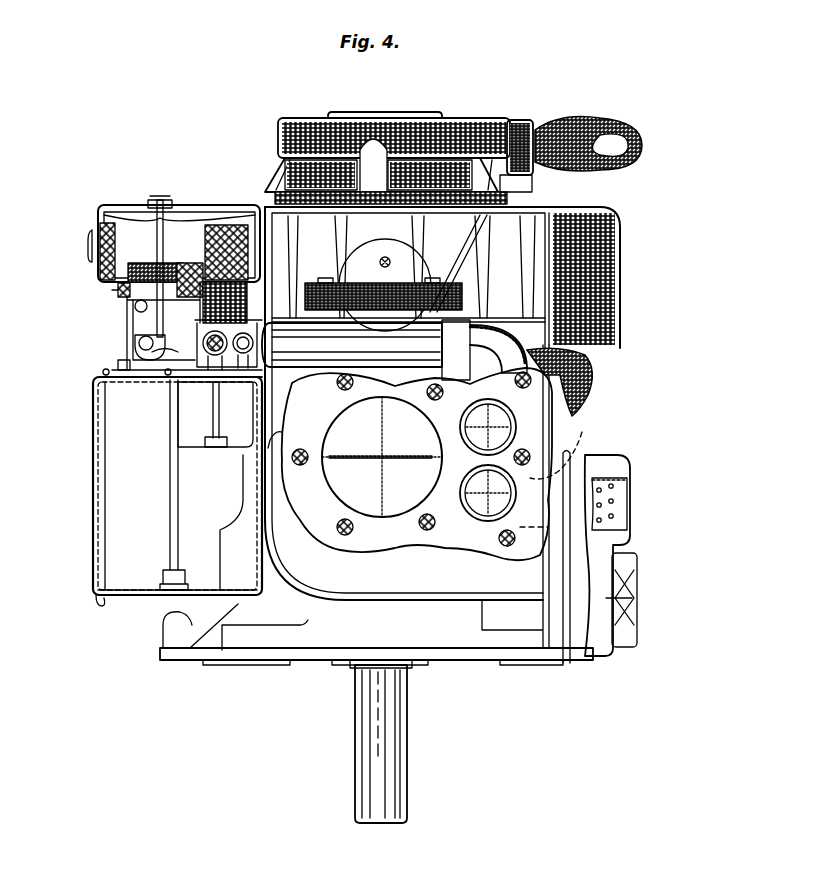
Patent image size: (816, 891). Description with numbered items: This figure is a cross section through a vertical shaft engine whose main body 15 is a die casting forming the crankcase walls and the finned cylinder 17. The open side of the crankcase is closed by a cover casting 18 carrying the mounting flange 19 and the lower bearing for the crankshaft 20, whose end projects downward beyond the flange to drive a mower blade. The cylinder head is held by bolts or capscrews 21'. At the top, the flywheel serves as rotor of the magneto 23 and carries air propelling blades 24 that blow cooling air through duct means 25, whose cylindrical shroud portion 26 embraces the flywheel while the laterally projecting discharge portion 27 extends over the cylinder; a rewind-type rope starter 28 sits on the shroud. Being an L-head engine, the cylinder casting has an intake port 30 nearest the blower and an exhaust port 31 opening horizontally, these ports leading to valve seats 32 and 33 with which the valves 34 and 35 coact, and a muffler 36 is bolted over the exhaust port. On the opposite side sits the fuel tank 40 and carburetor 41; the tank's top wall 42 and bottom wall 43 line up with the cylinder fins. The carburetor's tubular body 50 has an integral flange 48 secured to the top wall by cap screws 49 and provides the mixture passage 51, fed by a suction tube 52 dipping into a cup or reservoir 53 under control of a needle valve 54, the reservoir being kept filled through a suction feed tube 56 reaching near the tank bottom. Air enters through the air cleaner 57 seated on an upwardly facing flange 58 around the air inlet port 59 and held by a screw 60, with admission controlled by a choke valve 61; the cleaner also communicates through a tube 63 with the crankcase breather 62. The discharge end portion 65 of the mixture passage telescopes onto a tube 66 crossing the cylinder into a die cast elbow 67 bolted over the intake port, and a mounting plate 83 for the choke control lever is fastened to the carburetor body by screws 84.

The main body 15 is at (650, 325).
The finned cylinder 17 is at (385, 588).
The cover casting 18 is at (210, 648).
The mounting flange 19 is at (262, 665).
The crankshaft 20 is at (360, 745).
The bolts or capscrews 21' is at (409, 485).
The magneto 23 is at (405, 235).
The air propelling blades 24 is at (345, 240).
The duct means 25 is at (636, 214).
The shroud portion 26 is at (605, 282).
The discharge portion 27 is at (550, 255).
The rewind-type rope starter 28 is at (528, 112).
The intake port 30 is at (512, 365).
The exhaust port 31 is at (584, 434).
The valve seat 32 is at (460, 424).
The valve seat 33 is at (462, 496).
The intake valve 34 is at (467, 435).
The valve 35 is at (465, 482).
The muffler 36 is at (630, 478).
The fuel tank 40 is at (86, 450).
The carburetor 41 is at (85, 332).
The top wall 42 is at (122, 384).
The bottom wall 43 is at (145, 594).
The flange 48 is at (170, 376).
The cap screws 49 is at (118, 366).
The tubular body 50 is at (135, 345).
The mixture passage 51 is at (168, 356).
The suction tube 52 is at (212, 412).
The cup or reservoir 53 is at (243, 456).
The needle valve 54 is at (218, 330).
The suction feed tube 56 is at (174, 481).
The air cleaner 57 is at (108, 202).
The upwardly facing flange 58 is at (116, 290).
The air inlet port 59 is at (133, 306).
The screw 60 is at (162, 200).
The choke valve 61 is at (165, 290).
The crankcase breather 62 is at (572, 442).
The tube 63 is at (590, 370).
The discharge end portion 65 is at (280, 364).
The tube 66 is at (366, 350).
The die cast elbow 67 is at (482, 325).
The mounting plate 83 is at (217, 322).
The screws 84 is at (138, 346).